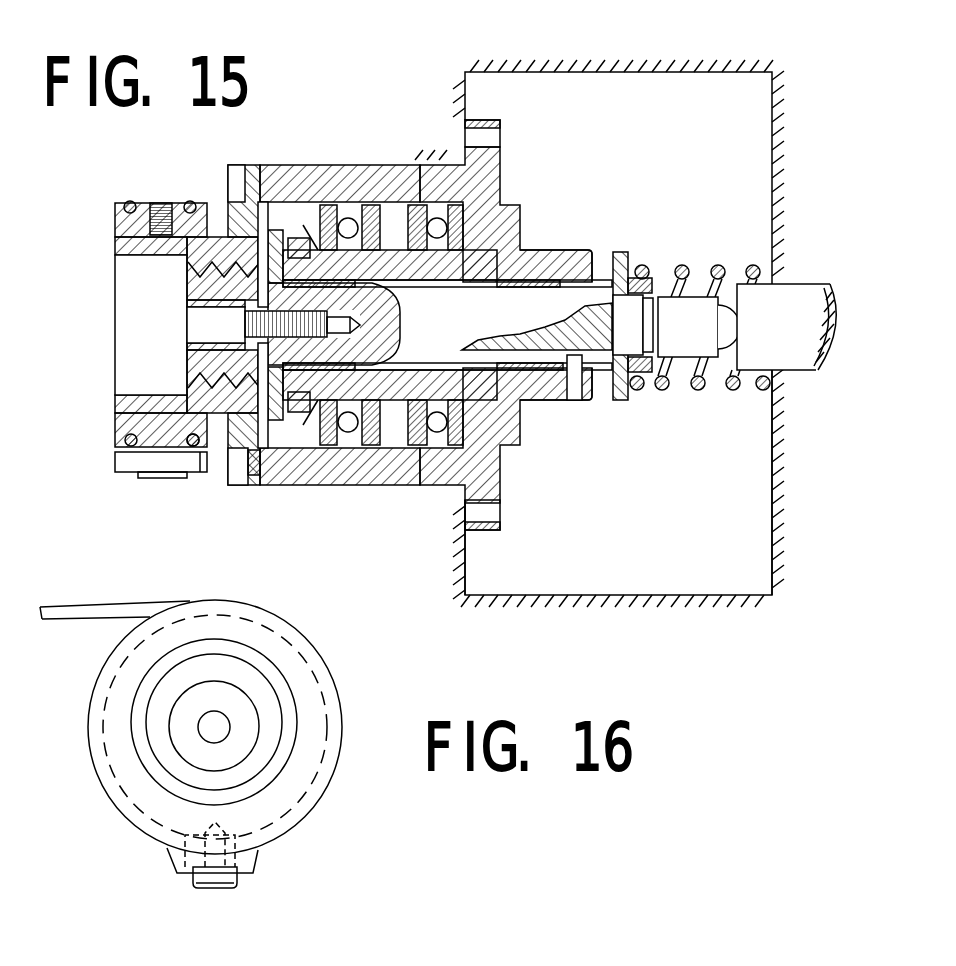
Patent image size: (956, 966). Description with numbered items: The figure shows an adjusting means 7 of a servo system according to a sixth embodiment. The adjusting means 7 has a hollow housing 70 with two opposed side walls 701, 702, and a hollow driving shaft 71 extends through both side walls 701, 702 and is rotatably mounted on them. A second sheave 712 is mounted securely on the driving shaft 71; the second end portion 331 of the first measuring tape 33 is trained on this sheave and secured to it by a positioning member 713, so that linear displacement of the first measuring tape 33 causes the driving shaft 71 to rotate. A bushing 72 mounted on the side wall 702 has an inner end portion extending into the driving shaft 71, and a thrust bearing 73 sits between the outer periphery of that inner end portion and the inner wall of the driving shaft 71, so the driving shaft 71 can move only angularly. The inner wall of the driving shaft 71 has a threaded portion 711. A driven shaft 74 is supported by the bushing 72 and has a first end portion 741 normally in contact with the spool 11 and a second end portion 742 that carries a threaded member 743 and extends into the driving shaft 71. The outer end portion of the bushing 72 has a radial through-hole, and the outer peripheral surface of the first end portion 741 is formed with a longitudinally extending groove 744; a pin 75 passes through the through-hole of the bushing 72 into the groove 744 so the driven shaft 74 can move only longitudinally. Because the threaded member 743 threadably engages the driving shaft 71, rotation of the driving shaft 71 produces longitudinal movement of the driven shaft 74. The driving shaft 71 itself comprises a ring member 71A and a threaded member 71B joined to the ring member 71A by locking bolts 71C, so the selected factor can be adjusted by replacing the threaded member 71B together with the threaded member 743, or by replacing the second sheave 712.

In FIG. 15, the adjusting means 7 is at (448, 367).
In FIG. 15, the spool 11 is at (790, 298).
In FIG. 15, the first measuring tape 33 is at (197, 447).
In FIG. 16, the first measuring tape 33 is at (75, 607).
In FIG. 15, the hollow housing 70 is at (273, 165).
In FIG. 15, the hollow driving shaft 71 is at (286, 317).
In FIG. 15, the ring member 71A is at (365, 163).
In FIG. 15, the threaded member 71B is at (228, 222).
In FIG. 16, the threaded member 71B is at (283, 703).
In FIG. 15, the locking bolts 71C is at (237, 462).
In FIG. 15, the bushing 72 is at (508, 205).
In FIG. 15, the thrust bearing 73 is at (463, 215).
In FIG. 15, the driven shaft 74 is at (372, 355).
In FIG. 16, the driven shaft 74 is at (202, 727).
In FIG. 15, the pin 75 is at (573, 395).
In FIG. 15, the side wall 701 is at (773, 460).
In FIG. 15, the side wall 702 is at (465, 563).
In FIG. 15, the threaded portion 711 is at (200, 270).
In FIG. 15, the second sheave 712 is at (115, 218).
In FIG. 16, the second sheave 712 is at (95, 688).
In FIG. 15, the positioning member 713 is at (130, 458).
In FIG. 16, the positioning member 713 is at (237, 880).
In FIG. 15, the first end portion 741 is at (733, 348).
In FIG. 15, the second end portion 742 is at (258, 342).
In FIG. 15, the threaded member 743 is at (203, 353).
In FIG. 16, the threaded member 743 is at (253, 740).
In FIG. 15, the groove 744 is at (528, 357).
In FIG. 16, the second end portion 331 is at (177, 875).